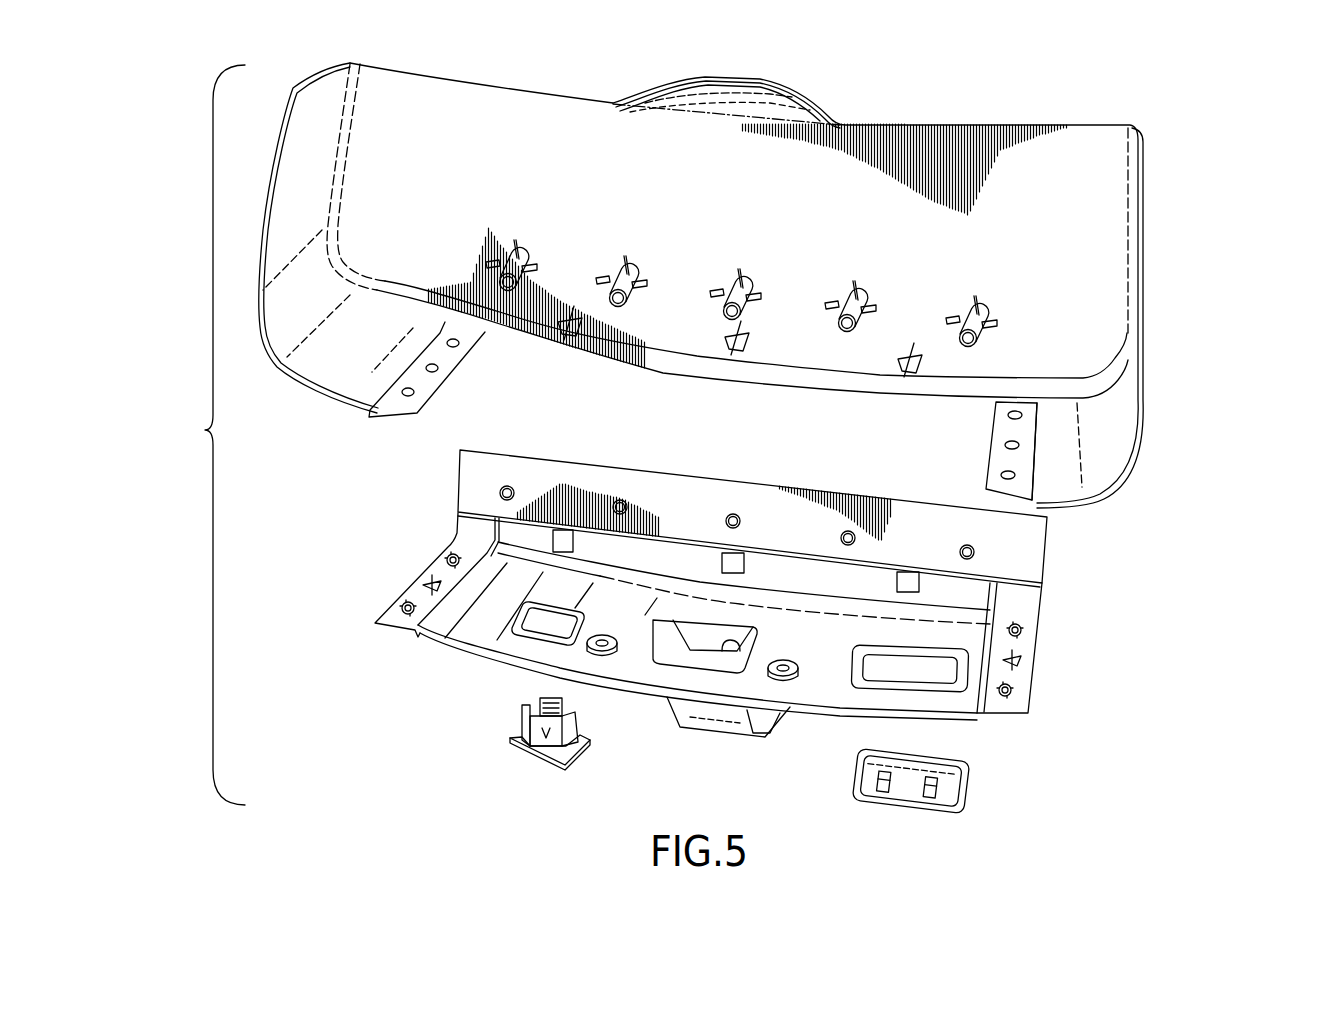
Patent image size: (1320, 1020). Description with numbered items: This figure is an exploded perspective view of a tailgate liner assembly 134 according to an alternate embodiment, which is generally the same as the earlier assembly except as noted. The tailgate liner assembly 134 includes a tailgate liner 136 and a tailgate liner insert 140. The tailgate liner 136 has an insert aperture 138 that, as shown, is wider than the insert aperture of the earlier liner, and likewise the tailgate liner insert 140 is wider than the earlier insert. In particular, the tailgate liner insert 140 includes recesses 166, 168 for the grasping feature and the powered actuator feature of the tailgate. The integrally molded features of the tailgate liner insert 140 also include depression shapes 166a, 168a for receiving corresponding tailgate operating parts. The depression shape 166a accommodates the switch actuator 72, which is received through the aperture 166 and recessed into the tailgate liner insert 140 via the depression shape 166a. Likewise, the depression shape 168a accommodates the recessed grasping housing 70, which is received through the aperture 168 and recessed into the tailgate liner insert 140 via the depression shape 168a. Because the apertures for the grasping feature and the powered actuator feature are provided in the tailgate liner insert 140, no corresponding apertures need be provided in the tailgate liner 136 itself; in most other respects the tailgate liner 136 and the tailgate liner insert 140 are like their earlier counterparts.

The tailgate liner assembly 134 is at (205, 430).
The tailgate liner 136 is at (1168, 282).
The insert aperture 138 is at (577, 383).
The tailgate liner insert 140 is at (1068, 630).
The recess 166 is at (532, 622).
The depression shape 166a is at (548, 640).
The recess 168 is at (865, 670).
The depression shape 168a is at (927, 687).
The recessed grasping housing 70 is at (910, 777).
The switch actuator 72 is at (527, 736).